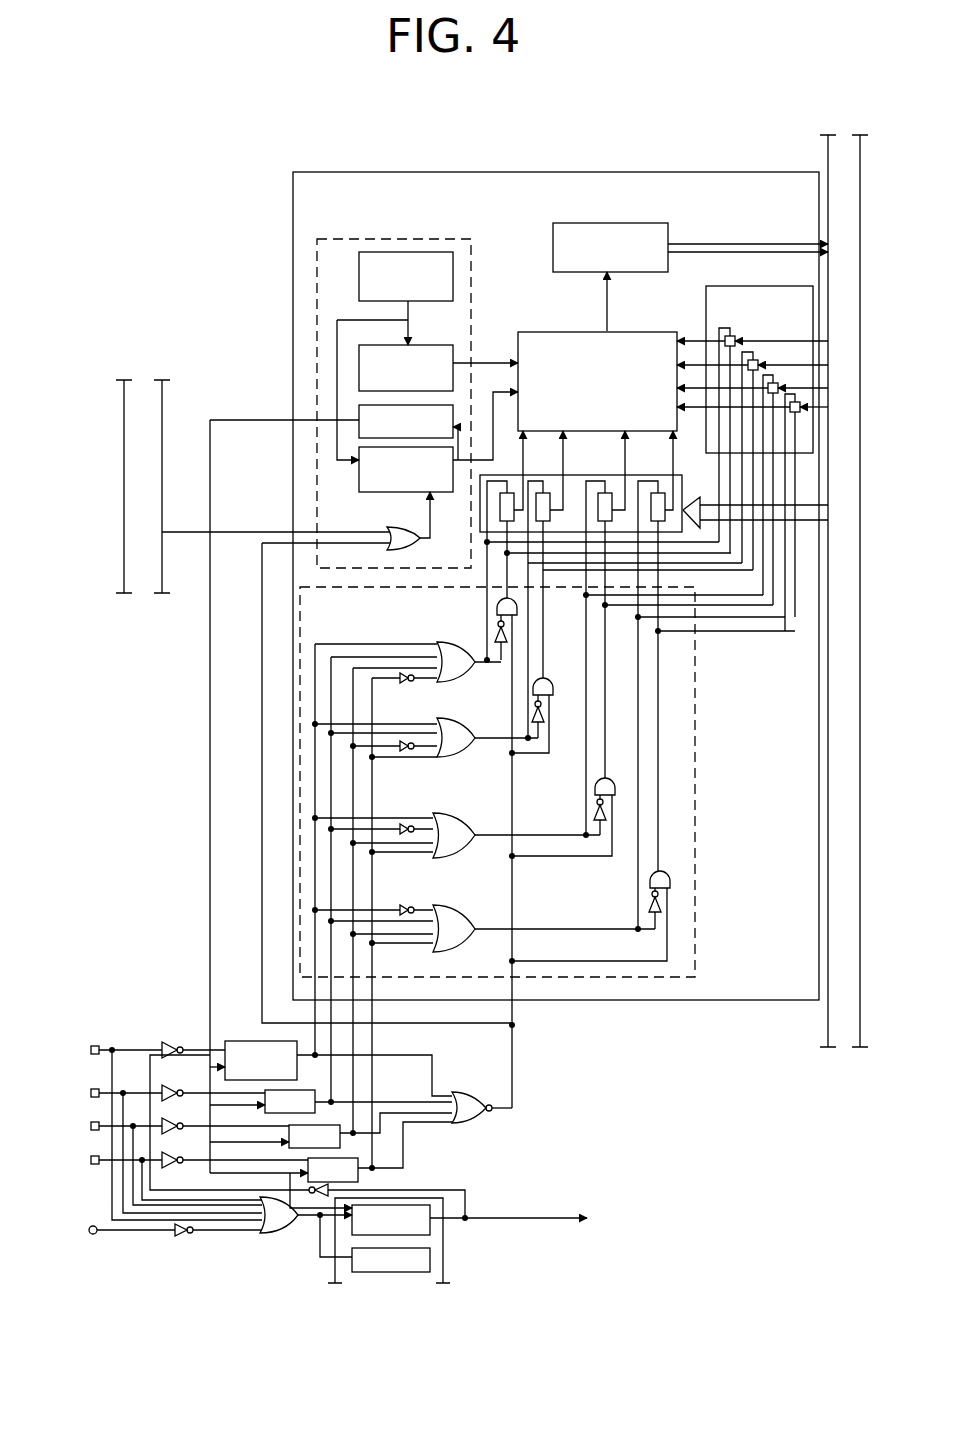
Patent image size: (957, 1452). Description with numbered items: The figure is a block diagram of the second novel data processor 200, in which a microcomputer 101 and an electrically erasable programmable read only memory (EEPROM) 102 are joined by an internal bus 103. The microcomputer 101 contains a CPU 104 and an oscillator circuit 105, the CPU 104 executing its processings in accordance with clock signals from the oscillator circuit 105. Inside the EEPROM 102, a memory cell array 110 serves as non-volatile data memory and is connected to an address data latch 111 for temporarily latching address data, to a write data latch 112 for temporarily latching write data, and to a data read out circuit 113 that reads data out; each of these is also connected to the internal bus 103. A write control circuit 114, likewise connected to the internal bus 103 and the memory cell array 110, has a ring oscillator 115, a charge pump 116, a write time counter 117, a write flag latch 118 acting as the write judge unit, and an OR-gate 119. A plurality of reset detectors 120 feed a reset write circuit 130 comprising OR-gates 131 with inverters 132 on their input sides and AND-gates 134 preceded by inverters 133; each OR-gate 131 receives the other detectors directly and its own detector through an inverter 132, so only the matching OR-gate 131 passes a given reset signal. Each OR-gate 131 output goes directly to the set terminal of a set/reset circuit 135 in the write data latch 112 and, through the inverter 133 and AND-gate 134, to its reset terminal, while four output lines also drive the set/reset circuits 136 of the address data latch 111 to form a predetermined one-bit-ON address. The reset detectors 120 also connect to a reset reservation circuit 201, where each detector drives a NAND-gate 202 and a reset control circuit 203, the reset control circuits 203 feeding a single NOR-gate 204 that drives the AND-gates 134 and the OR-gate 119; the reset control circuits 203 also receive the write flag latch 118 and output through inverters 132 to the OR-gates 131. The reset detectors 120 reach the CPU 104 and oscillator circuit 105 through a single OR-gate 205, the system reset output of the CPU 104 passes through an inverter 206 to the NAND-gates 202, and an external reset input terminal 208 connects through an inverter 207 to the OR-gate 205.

The data processor 200 is at (693, 165).
The electrically erasable programmable read only memory (EEPROM) 102 is at (451, 172).
The internal bus 103 is at (157, 402).
The write control circuit 114 is at (350, 239).
The ring oscillator 115 is at (453, 275).
The charge pump 116 is at (455, 340).
The write time counter 117 is at (390, 493).
The write flag latch 118 is at (356, 412).
The OR-gate 119 is at (413, 545).
The data read out circuit 113 is at (630, 222).
The memory cell array 110 is at (560, 331).
The address data latch 111 is at (725, 286).
The set/reset circuits 136 is at (757, 358).
The write data latch 112 is at (654, 680).
The set/reset circuits 135 is at (600, 491).
The reset write circuit 130 is at (697, 977).
The OR-gates 131 is at (450, 642).
The inverters 132 is at (409, 682).
The inverters 133 is at (660, 900).
The AND-gates 134 is at (610, 777).
The reset reservation circuit 201 is at (478, 1136).
The reset detectors 120 is at (112, 1088).
The NAND-gates 202 is at (180, 1088).
The reset control circuits 203 is at (240, 1041).
The NOR-gate 204 is at (462, 1092).
The OR-gate 205 is at (265, 1236).
The inverter 206 is at (316, 1197).
The inverter 207 is at (181, 1236).
The reset input terminal 208 is at (90, 1234).
The microcomputer 101 is at (445, 1238).
The CPU 104 is at (412, 1205).
The oscillator circuit 105 is at (430, 1262).